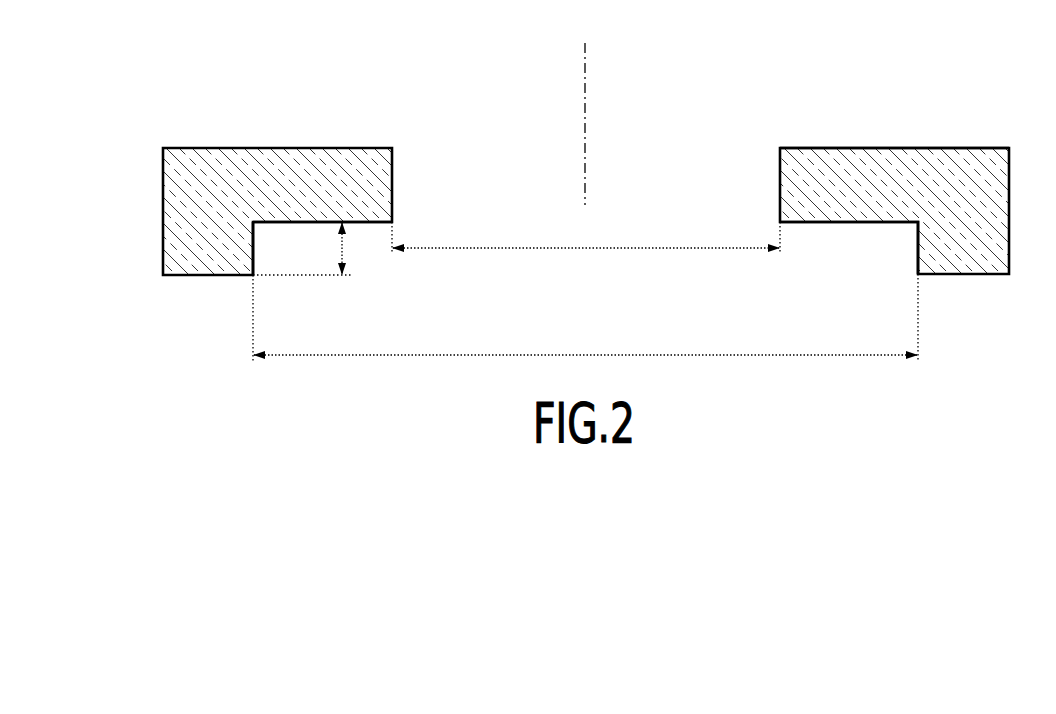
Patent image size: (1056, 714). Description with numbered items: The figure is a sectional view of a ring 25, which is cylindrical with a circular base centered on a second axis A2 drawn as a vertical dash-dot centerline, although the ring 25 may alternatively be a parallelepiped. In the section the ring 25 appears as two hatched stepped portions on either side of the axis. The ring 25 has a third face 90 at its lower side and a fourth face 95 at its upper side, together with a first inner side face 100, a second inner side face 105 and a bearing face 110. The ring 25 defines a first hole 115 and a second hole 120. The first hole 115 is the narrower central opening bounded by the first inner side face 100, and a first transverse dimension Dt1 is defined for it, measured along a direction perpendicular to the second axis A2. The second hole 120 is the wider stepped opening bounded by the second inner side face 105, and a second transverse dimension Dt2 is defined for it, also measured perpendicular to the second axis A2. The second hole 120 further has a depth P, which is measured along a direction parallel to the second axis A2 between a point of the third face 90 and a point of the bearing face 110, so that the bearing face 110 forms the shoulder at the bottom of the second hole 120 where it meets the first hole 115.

The ring 25 is at (131, 200).
The third face 90 is at (970, 278).
The fourth face 95 is at (980, 137).
The first inner side face 100 is at (398, 170).
The second inner side face 105 is at (258, 248).
The bearing face 110 is at (318, 225).
The first hole 115 is at (732, 169).
The second hole 120 is at (803, 244).
The second axis A2 is at (588, 50).
The depth P is at (307, 249).
The first transverse dimension Dt1 is at (586, 232).
The second transverse dimension Dt2 is at (585, 318).